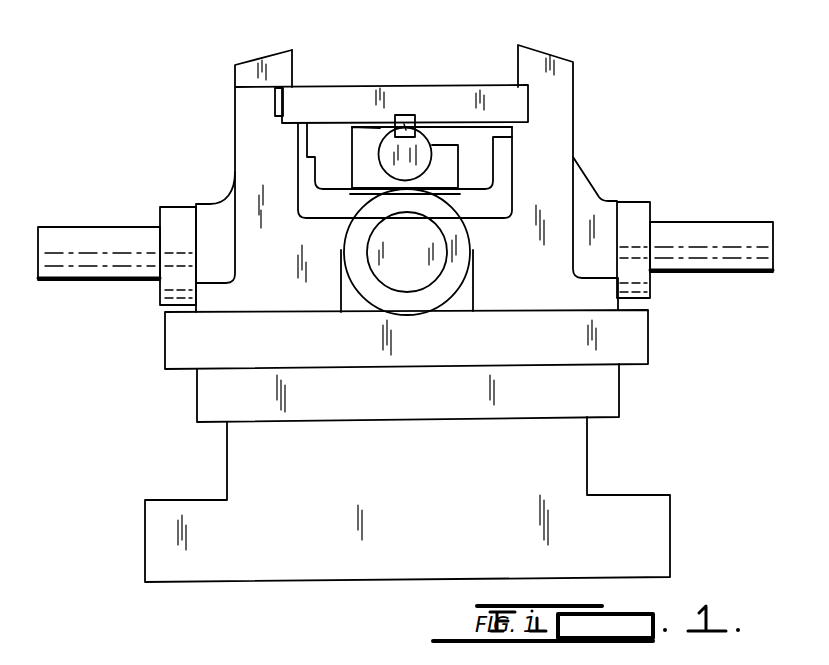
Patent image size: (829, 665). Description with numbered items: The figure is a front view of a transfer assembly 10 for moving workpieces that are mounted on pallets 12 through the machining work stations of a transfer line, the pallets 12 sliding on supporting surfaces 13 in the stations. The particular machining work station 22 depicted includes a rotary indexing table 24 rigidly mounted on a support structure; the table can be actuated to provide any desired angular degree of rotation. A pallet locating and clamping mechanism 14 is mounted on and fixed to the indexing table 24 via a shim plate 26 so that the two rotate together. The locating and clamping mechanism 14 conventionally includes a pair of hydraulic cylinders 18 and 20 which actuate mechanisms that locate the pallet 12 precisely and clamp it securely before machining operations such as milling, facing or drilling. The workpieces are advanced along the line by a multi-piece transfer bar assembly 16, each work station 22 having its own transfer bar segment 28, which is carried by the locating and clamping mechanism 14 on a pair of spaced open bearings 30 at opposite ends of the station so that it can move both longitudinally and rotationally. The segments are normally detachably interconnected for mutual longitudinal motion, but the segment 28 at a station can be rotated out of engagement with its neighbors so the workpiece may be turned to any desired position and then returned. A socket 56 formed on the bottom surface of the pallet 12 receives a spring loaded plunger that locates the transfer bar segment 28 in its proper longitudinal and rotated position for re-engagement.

The transfer assembly 10 is at (636, 109).
The pallet 12 is at (468, 84).
The supporting surface 13 is at (296, 118).
The pallet locating and clamping mechanism 14 is at (226, 119).
The multi-piece transfer bar assembly 16 is at (377, 137).
The hydraulic cylinder 18 is at (700, 236).
The hydraulic cylinder 20 is at (96, 237).
The work station 22 is at (658, 343).
The rotary indexing table 24 is at (588, 463).
The shim plate 26 is at (620, 392).
The transfer bar segment 28 is at (405, 181).
The open bearing 30 is at (458, 168).
The socket 56 is at (407, 115).